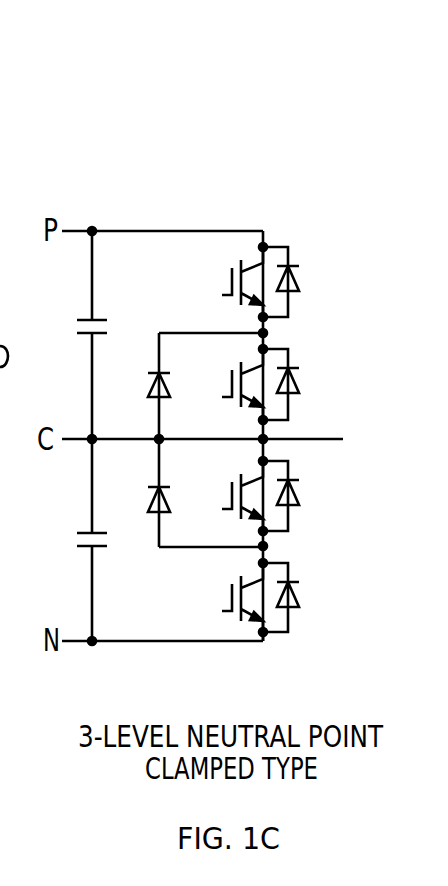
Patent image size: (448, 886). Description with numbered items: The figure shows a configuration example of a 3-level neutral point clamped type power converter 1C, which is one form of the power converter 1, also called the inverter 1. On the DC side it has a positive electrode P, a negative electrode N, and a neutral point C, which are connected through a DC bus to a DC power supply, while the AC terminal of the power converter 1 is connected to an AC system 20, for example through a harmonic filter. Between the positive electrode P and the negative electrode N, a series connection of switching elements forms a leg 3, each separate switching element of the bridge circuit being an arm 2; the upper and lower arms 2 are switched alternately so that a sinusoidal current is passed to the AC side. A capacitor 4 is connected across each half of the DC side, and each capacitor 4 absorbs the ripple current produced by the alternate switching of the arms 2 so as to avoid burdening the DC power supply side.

The power converter 1 is at (92, 110).
The 3-level neutral point clamped type power converter 1C is at (178, 205).
The arm 2 is at (300, 272).
The leg 3 is at (271, 647).
The capacitor 4 is at (70, 326).
The AC system 20 is at (364, 421).